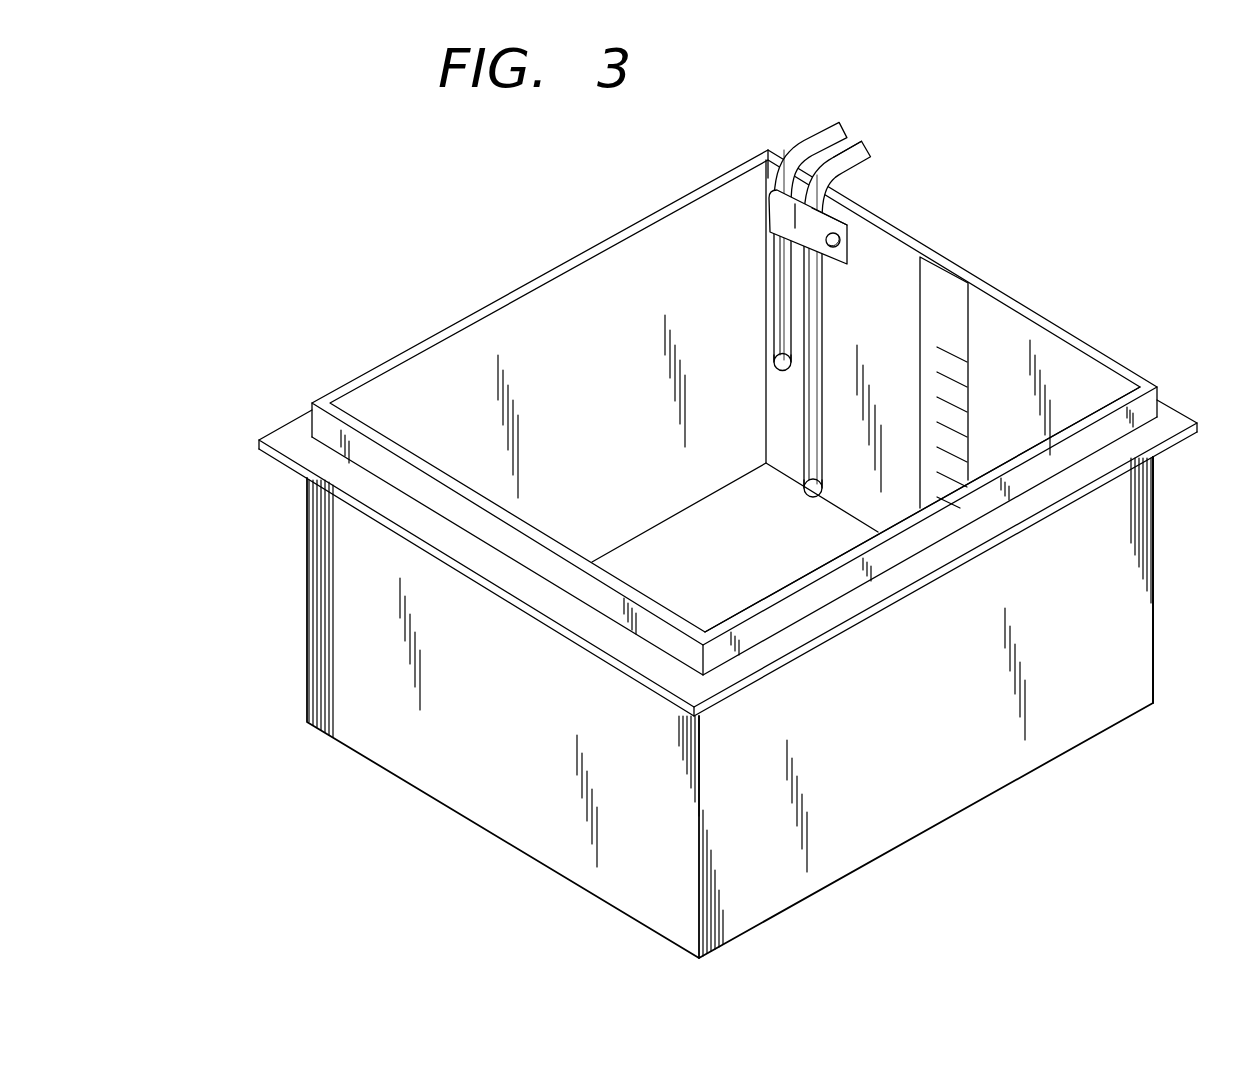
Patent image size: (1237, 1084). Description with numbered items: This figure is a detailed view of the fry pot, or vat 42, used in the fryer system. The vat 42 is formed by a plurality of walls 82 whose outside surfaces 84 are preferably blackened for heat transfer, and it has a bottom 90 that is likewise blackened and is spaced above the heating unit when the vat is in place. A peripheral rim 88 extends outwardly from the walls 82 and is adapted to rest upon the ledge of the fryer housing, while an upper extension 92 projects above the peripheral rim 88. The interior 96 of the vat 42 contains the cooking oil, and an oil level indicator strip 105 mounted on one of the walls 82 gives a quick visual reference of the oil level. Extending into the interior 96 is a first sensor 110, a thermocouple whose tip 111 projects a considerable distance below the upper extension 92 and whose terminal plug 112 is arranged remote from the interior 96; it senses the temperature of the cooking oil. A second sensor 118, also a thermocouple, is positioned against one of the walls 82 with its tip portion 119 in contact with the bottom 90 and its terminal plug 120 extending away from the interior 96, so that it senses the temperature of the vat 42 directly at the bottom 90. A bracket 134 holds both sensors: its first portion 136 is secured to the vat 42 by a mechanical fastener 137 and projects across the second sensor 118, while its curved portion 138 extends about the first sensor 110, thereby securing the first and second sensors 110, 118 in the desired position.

The vat 42 is at (452, 778).
The walls 82 is at (540, 310).
The outside surfaces 84 is at (1036, 580).
The peripheral rim 88 is at (313, 453).
The bottom 90 is at (730, 598).
The upper extension 92 is at (390, 463).
The interior 96 is at (479, 371).
The oil level indicator strip 105 is at (947, 300).
The first sensor 110 is at (824, 302).
The tip 111 is at (776, 350).
The terminal plug 112 is at (842, 124).
The second sensor 118 is at (862, 169).
The tip portion 119 is at (800, 487).
The terminal plug 120 is at (866, 143).
The bracket 134 is at (756, 190).
The first portion 136 is at (834, 218).
The mechanical fastener 137 is at (836, 249).
The curved portion 138 is at (773, 214).